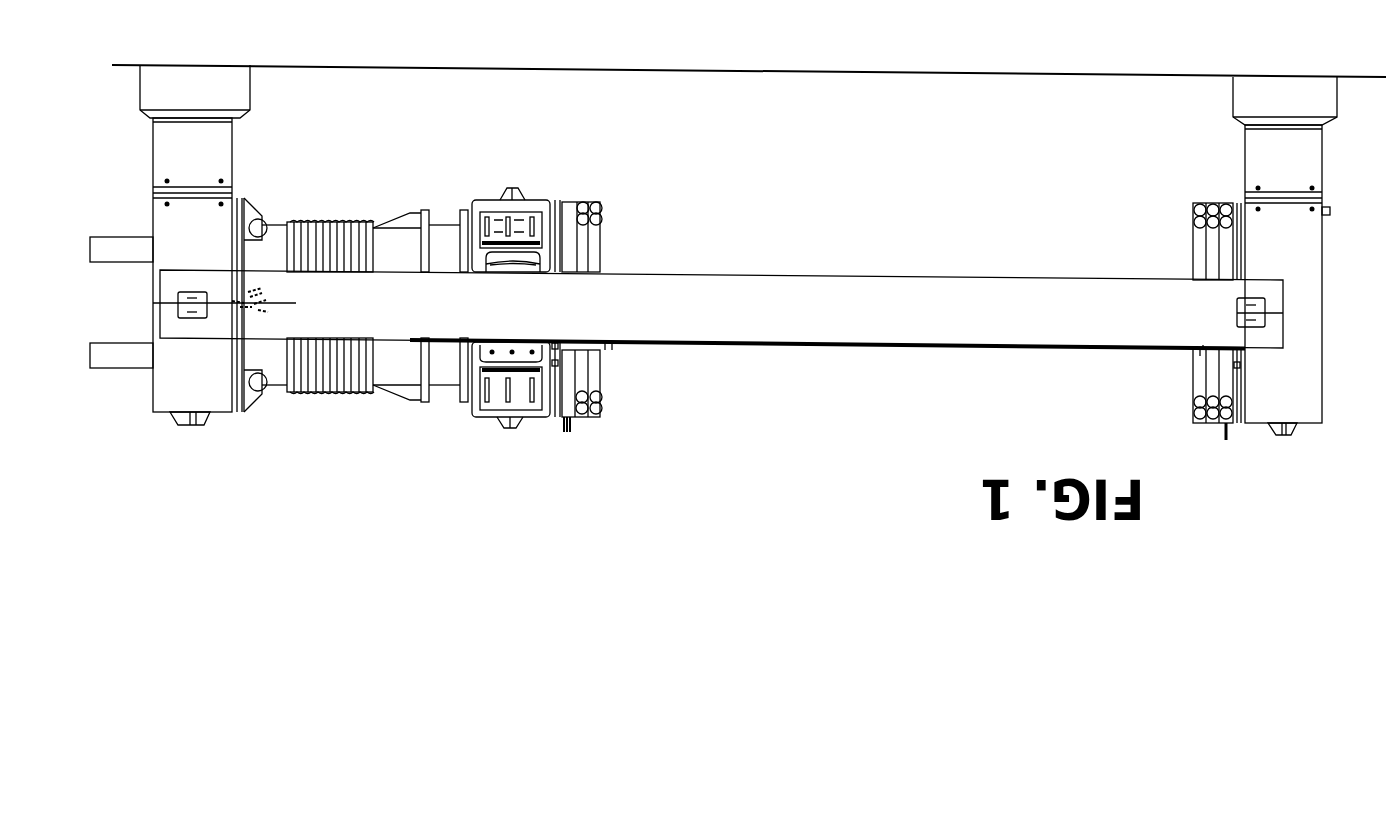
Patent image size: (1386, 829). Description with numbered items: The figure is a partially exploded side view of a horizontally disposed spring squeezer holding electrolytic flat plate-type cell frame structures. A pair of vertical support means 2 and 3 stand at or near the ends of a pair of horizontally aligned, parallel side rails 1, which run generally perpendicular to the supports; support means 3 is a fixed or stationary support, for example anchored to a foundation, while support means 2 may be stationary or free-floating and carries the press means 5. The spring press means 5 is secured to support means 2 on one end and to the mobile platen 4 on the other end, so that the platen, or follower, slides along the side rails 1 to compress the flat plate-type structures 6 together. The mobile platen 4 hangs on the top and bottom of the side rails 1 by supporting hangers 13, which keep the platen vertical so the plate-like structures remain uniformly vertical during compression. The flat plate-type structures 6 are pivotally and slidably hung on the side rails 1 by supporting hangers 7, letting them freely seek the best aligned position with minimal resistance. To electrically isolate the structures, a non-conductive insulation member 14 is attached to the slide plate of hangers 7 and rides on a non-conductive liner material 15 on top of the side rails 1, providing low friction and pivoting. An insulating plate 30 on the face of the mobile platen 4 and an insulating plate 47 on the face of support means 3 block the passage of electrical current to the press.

The side rails 1 is at (913, 368).
The support means 2 is at (166, 442).
The support means 3 is at (1333, 372).
The mobile platen 4 is at (530, 440).
The press means 5 is at (365, 314).
The flat plate-type structures 6 is at (902, 347).
The supporting hangers 7 is at (1200, 355).
The supporting hangers 13 is at (492, 323).
The insulation member 14 is at (1203, 347).
The liner material 15 is at (833, 348).
The insulating plate 30 is at (542, 466).
The insulating plate 47 is at (1278, 460).